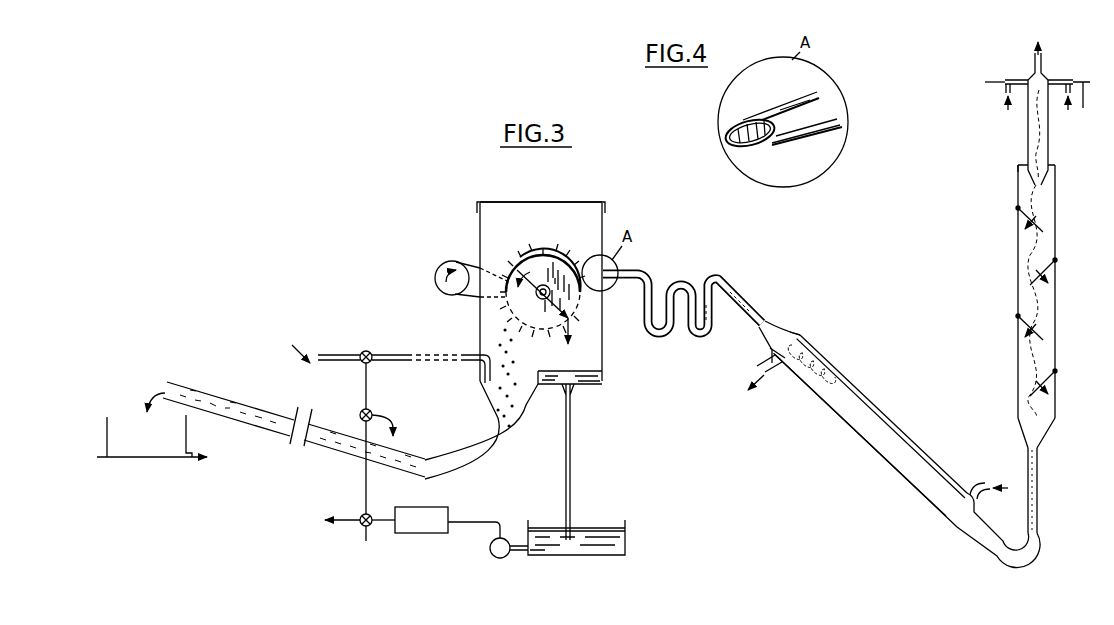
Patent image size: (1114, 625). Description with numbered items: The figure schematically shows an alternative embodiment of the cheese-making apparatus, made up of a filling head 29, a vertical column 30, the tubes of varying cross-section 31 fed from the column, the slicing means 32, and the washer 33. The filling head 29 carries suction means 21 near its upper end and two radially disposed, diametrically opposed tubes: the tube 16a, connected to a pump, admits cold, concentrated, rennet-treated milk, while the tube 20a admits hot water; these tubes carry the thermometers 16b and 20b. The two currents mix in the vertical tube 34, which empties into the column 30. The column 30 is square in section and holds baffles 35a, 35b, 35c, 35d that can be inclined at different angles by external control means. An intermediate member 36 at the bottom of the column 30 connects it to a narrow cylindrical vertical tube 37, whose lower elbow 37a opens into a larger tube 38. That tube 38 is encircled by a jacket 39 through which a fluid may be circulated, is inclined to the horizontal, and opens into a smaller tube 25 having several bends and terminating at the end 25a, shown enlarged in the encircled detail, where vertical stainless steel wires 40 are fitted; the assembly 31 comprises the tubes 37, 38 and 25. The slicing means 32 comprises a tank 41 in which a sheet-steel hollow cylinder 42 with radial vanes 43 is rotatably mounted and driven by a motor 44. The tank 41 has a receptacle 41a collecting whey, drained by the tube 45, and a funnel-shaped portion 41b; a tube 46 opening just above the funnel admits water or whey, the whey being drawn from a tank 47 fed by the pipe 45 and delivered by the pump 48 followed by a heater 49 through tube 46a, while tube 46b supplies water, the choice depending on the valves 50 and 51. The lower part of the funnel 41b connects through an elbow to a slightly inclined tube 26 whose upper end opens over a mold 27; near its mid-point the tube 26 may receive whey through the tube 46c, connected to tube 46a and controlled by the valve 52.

In FIG. 3, the inlet tube 16a is at (1069, 80).
In FIG. 3, the thermometer 16b is at (1085, 105).
In FIG. 3, the hot water inlet tube 20a is at (1010, 78).
In FIG. 3, the thermometer 20b is at (984, 83).
In FIG. 3, the suction means 21 is at (1043, 56).
In FIG. 3, the smaller tube 25 is at (737, 296).
In FIG. 3, the tube end 25a is at (598, 283).
In FIG. 4, the tube end 25a is at (800, 126).
In FIG. 3, the inclined tube 26 is at (260, 432).
In FIG. 3, the mold 27 is at (147, 459).
In FIG. 3, the filling head 29 is at (1022, 144).
In FIG. 3, the vertical column 30 is at (1012, 234).
In FIG. 3, the tubes of varying cross-section 31 is at (889, 478).
In FIG. 3, the slicing means 32 is at (531, 198).
In FIG. 3, the washer 33 is at (291, 344).
In FIG. 3, the vertical tube 34 is at (1049, 134).
In FIG. 3, the baffle 35a is at (1021, 208).
In FIG. 3, the baffle 35b is at (1054, 263).
In FIG. 3, the baffle 35c is at (1016, 318).
In FIG. 3, the baffle 35d is at (1054, 376).
In FIG. 3, the intermediate member 36 is at (1021, 437).
In FIG. 3, the narrow cylindrical vertical tube 37 is at (1040, 482).
In FIG. 3, the elbow 37a is at (1014, 549).
In FIG. 3, the larger tube 38 is at (863, 433).
In FIG. 3, the jacket 39 is at (818, 403).
In FIG. 4, the vertical wires 40 is at (748, 142).
In FIG. 3, the tank 41 is at (478, 228).
In FIG. 3, the receptacle 41a is at (594, 384).
In FIG. 3, the funnel-shaped portion 41b is at (521, 407).
In FIG. 3, the hollow cylinder 42 is at (506, 305).
In FIG. 3, the radial vanes 43 is at (571, 258).
In FIG. 3, the motor 44 is at (456, 264).
In FIG. 3, the drain tube 45 is at (572, 446).
In FIG. 3, the inlet tube 46 is at (470, 361).
In FIG. 3, the whey tube 46a is at (366, 490).
In FIG. 3, the water tube 46b is at (337, 354).
In FIG. 3, the whey supply tube 46c is at (400, 416).
In FIG. 3, the whey tank 47 is at (582, 556).
In FIG. 3, the pump 48 is at (500, 558).
In FIG. 3, the heater 49 is at (433, 534).
In FIG. 3, the valve 50 is at (368, 351).
In FIG. 3, the valve 51 is at (360, 541).
In FIG. 3, the valve 52 is at (360, 410).